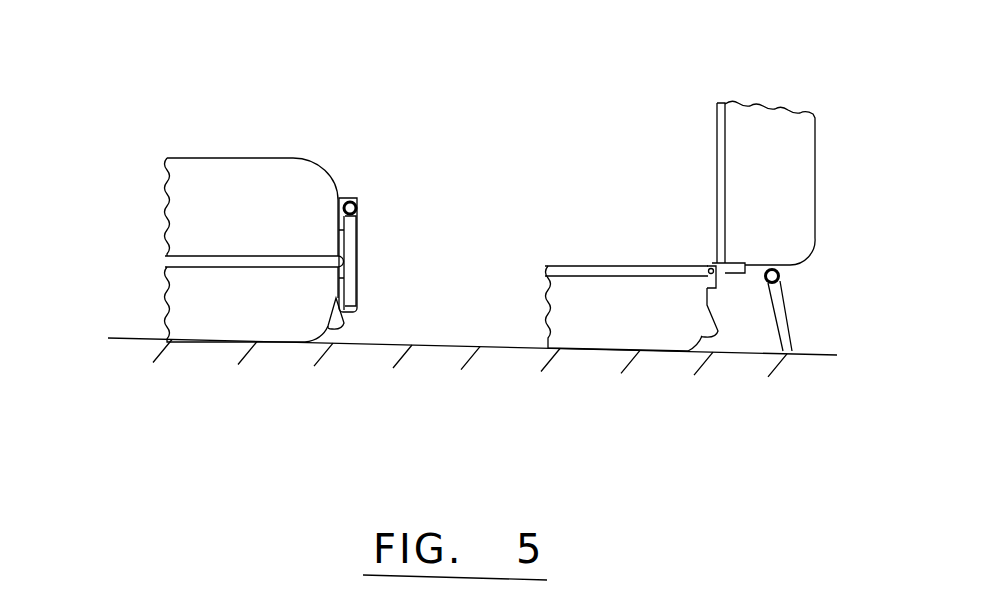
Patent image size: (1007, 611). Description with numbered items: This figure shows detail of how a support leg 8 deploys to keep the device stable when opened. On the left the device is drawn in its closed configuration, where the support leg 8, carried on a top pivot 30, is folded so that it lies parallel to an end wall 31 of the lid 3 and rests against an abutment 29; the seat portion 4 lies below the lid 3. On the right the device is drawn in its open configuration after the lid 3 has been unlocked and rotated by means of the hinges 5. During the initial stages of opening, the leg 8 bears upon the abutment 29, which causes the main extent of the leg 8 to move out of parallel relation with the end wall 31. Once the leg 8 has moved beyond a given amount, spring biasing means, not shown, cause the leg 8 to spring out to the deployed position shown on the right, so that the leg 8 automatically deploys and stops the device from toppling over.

The lid 3 is at (227, 182).
The seat cushion 4 is at (228, 305).
The hinges 5 is at (716, 284).
The support leg 8 is at (352, 245).
The abutment 29 is at (338, 322).
The top pivot 30 is at (357, 203).
The end wall 31 is at (341, 190).